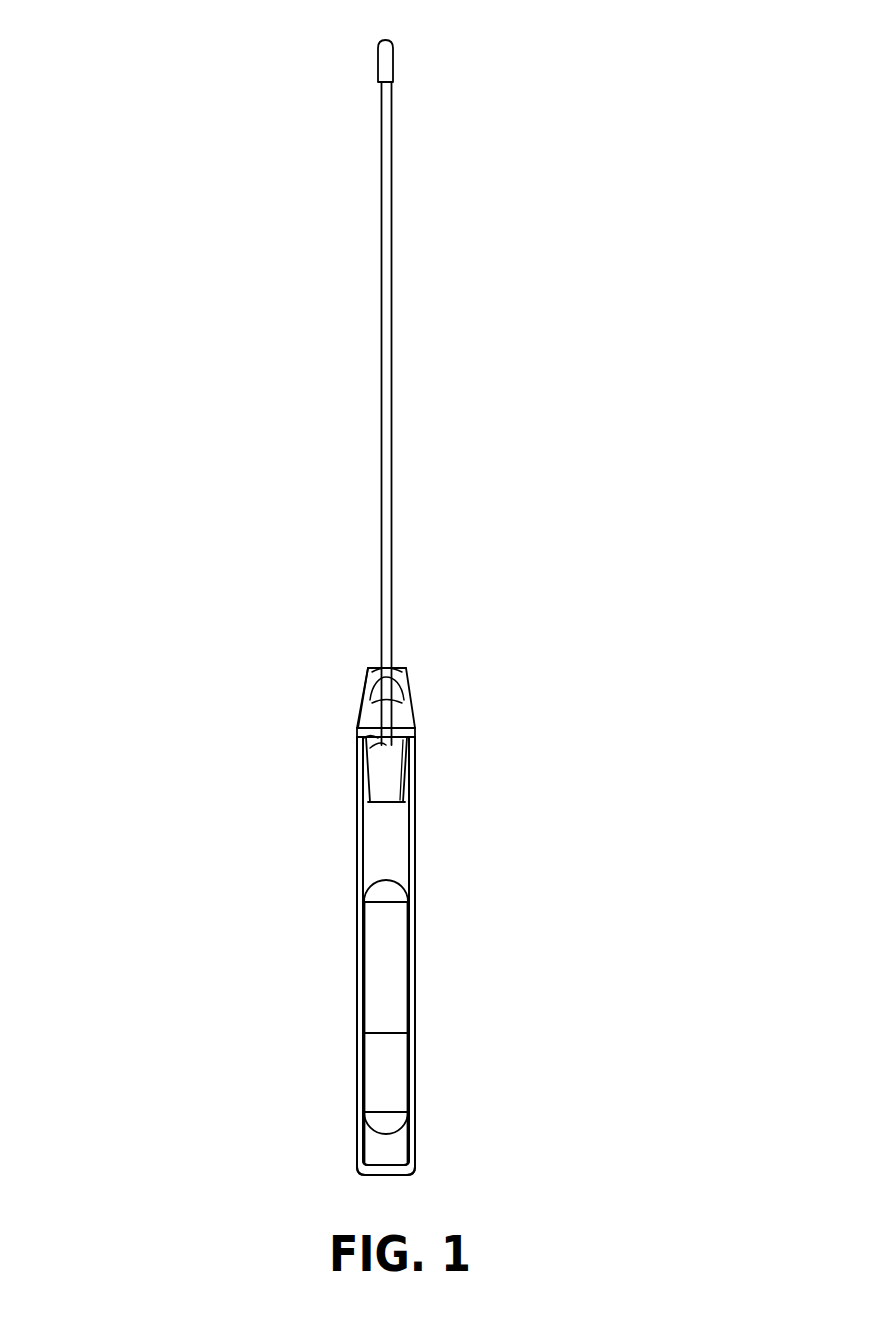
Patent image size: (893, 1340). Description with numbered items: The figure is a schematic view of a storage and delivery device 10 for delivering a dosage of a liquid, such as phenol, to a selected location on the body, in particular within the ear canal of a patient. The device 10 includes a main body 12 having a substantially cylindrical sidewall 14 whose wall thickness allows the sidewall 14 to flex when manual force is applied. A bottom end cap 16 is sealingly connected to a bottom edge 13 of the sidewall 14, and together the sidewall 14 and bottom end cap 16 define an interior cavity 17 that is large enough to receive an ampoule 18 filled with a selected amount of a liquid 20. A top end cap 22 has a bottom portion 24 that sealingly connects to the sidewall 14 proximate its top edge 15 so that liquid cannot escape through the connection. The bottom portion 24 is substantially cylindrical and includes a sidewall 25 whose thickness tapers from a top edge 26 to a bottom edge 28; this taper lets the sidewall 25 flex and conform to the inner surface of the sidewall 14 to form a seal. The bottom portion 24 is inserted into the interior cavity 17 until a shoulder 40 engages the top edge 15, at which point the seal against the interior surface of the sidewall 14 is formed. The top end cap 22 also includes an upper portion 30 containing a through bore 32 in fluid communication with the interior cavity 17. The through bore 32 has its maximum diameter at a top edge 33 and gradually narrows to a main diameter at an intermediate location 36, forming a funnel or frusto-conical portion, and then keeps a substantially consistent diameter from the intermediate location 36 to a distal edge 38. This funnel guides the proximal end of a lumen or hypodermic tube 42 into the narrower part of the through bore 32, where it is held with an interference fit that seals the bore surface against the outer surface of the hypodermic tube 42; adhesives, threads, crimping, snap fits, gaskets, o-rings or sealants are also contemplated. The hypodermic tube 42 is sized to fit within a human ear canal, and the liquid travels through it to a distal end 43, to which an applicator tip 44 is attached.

The storage and delivery device 10 is at (243, 609).
The main body 12 is at (431, 1016).
The bottom edge 13 is at (358, 1145).
The sidewall 14 is at (357, 853).
The top edge 15 is at (398, 738).
The bottom end cap 16 is at (390, 1176).
The interior cavity 17 is at (398, 850).
The ampoule 18 is at (419, 889).
The liquid 20 is at (375, 1053).
The top end cap 22 is at (427, 694).
The bottom portion 24 is at (413, 768).
The sidewall 25 is at (362, 754).
The top edge 26 is at (362, 742).
The bottom edge 28 is at (362, 802).
The upper portion 30 is at (362, 708).
The through bore 32 is at (393, 686).
The top edge 33 is at (375, 668).
The intermediate location 36 is at (404, 668).
The distal edge 38 is at (368, 749).
The shoulder 40 is at (387, 700).
The hypodermic tube 42 is at (426, 284).
The distal end 43 is at (411, 82).
The applicator tip 44 is at (391, 43).